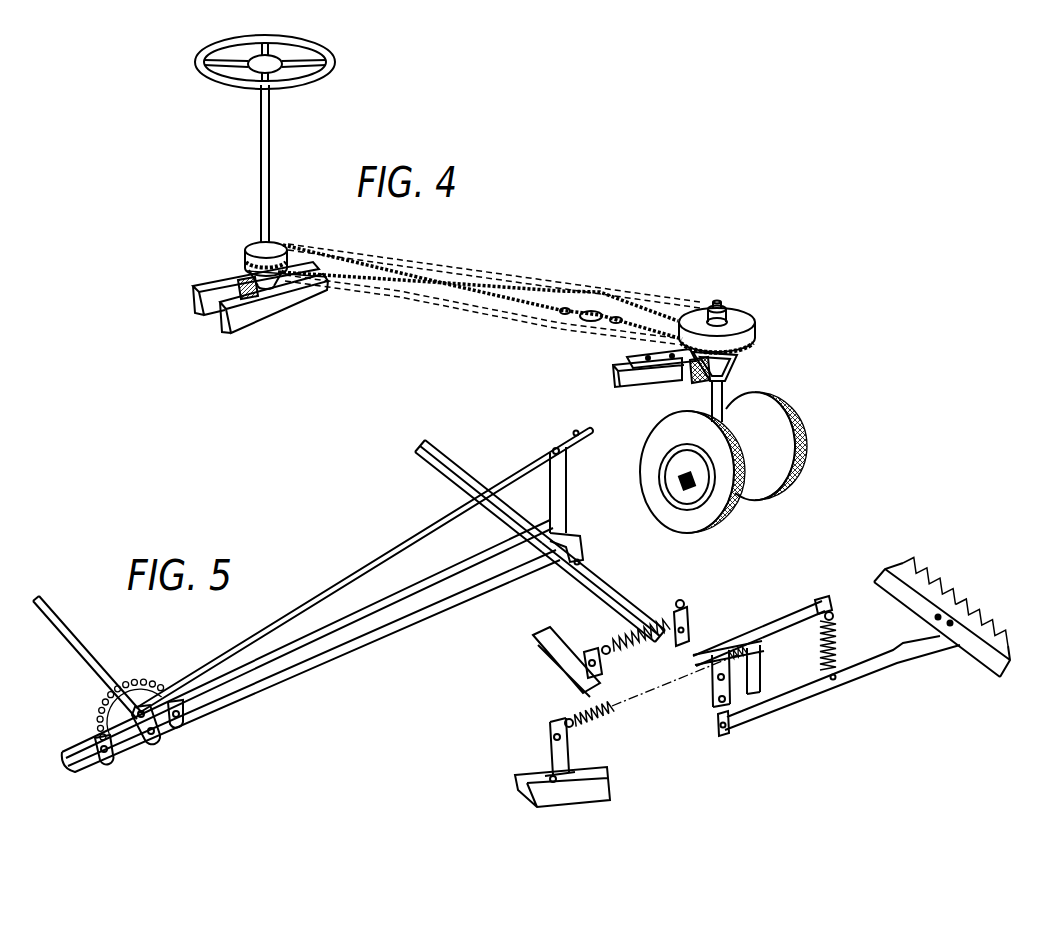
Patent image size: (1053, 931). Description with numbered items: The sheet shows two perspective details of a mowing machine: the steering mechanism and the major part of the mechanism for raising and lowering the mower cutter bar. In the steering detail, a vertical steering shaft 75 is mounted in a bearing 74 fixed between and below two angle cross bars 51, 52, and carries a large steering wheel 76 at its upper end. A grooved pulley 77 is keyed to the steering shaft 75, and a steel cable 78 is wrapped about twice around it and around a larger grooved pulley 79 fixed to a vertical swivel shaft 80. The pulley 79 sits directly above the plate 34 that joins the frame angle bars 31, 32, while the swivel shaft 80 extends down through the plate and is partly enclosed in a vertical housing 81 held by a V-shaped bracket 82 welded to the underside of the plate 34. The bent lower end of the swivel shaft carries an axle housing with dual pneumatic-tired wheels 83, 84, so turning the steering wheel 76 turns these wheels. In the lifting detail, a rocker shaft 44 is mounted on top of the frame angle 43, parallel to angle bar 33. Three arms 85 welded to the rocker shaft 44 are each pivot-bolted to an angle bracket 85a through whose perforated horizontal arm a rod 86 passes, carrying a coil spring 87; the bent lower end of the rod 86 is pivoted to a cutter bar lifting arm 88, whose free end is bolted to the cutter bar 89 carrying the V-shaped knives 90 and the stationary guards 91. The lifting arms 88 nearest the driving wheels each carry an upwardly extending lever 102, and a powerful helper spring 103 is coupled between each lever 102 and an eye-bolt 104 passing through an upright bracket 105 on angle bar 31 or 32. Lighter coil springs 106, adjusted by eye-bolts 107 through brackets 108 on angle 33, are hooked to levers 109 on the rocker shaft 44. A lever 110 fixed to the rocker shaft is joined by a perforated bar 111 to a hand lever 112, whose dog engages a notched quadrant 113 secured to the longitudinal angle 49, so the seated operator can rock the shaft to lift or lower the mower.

In FIG. 4, the steering wheel 76 is at (223, 84).
In FIG. 4, the steering shaft 75 is at (261, 173).
In FIG. 4, the grooved pulley 77 is at (250, 247).
In FIG. 4, the steel cable 78 is at (461, 263).
In FIG. 4, the grooved pulley 79 is at (743, 317).
In FIG. 4, the swivel shaft 80 is at (722, 305).
In FIG. 4, the vertical housing 81 is at (723, 387).
In FIG. 4, the V-shaped bracket 82 is at (697, 378).
In FIG. 4, the dual wheel 83 is at (683, 522).
In FIG. 4, the dual wheel 84 is at (757, 483).
In FIG. 4, the plate 34 is at (662, 354).
In FIG. 4, the angle bar 32 is at (623, 377).
In FIG. 4, the cross bar 52 is at (215, 283).
In FIG. 4, the cross bar 51 is at (258, 313).
In FIG. 4, the bearing 74 is at (200, 300).
In FIG. 5, the angle 43 is at (453, 452).
In FIG. 5, the rocker shaft 44 is at (620, 577).
In FIG. 5, the lever 110 is at (583, 490).
In FIG. 5, the perforated bar 111 is at (420, 538).
In FIG. 5, the hand lever 112 is at (92, 662).
In FIG. 5, the notched quadrant 113 is at (157, 677).
In FIG. 5, the angle 49 is at (207, 705).
In FIG. 5, the eye-bolt 107 is at (603, 650).
In FIG. 5, the coil spring 106 is at (630, 632).
In FIG. 5, the angle bar 33 is at (553, 647).
In FIG. 5, the bracket 108 is at (600, 660).
In FIG. 5, the lever 109 is at (705, 619).
In FIG. 5, the helper spring 103 is at (600, 713).
In FIG. 5, the eye-bolt 104 is at (575, 727).
In FIG. 5, the upright bracket 105 is at (553, 753).
In FIG. 5, the angle bar 31 is at (603, 775).
In FIG. 5, the lever 102 is at (745, 665).
In FIG. 5, the arm 85 is at (778, 630).
In FIG. 5, the angle bracket 85a is at (820, 599).
In FIG. 5, the rod 86 is at (838, 614).
In FIG. 5, the coil spring 87 is at (840, 640).
In FIG. 5, the cutter bar lifting arm 88 is at (862, 668).
In FIG. 5, the cutter bar 89 is at (977, 647).
In FIG. 5, the knives 90 is at (933, 578).
In FIG. 5, the stationary guards 91 is at (1007, 630).